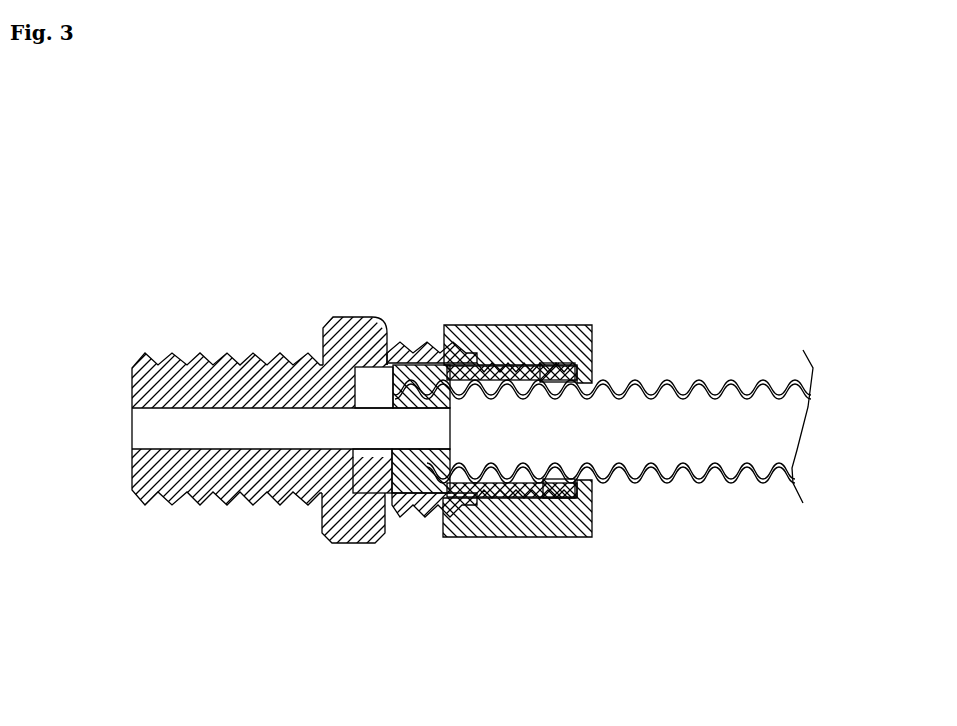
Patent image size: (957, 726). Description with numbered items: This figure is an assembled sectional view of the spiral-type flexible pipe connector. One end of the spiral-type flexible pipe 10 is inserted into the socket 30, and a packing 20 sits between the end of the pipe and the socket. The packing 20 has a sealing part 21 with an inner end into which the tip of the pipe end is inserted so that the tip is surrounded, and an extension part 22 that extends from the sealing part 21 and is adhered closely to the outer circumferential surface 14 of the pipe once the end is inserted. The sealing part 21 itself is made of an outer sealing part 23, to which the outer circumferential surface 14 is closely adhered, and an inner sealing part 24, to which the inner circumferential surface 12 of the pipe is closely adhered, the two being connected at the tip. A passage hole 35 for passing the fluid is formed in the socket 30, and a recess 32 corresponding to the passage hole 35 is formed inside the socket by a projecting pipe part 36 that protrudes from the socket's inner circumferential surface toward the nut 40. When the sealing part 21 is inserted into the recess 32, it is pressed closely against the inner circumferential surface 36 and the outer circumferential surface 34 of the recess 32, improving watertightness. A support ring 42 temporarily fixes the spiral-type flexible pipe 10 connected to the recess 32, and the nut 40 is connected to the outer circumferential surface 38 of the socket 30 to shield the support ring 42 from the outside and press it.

The spiral-type flexible pipe 10 is at (658, 485).
The inner circumferential surface 12 is at (723, 482).
The outer circumferential surface 14 is at (760, 485).
The packing 20 is at (457, 178).
The sealing part 21 is at (433, 217).
The extension part 22 is at (498, 335).
The outer sealing part 23 is at (447, 350).
The inner sealing part 24 is at (420, 347).
The socket 30 is at (355, 298).
The recess 32 is at (371, 386).
The outer circumferential surface of the recess 34 is at (380, 483).
The passage hole 35 is at (180, 427).
The projecting pipe part 36 is at (353, 367).
The outer circumferential surface of the socket 38 is at (430, 513).
The nut 40 is at (590, 335).
The support ring 42 is at (557, 362).